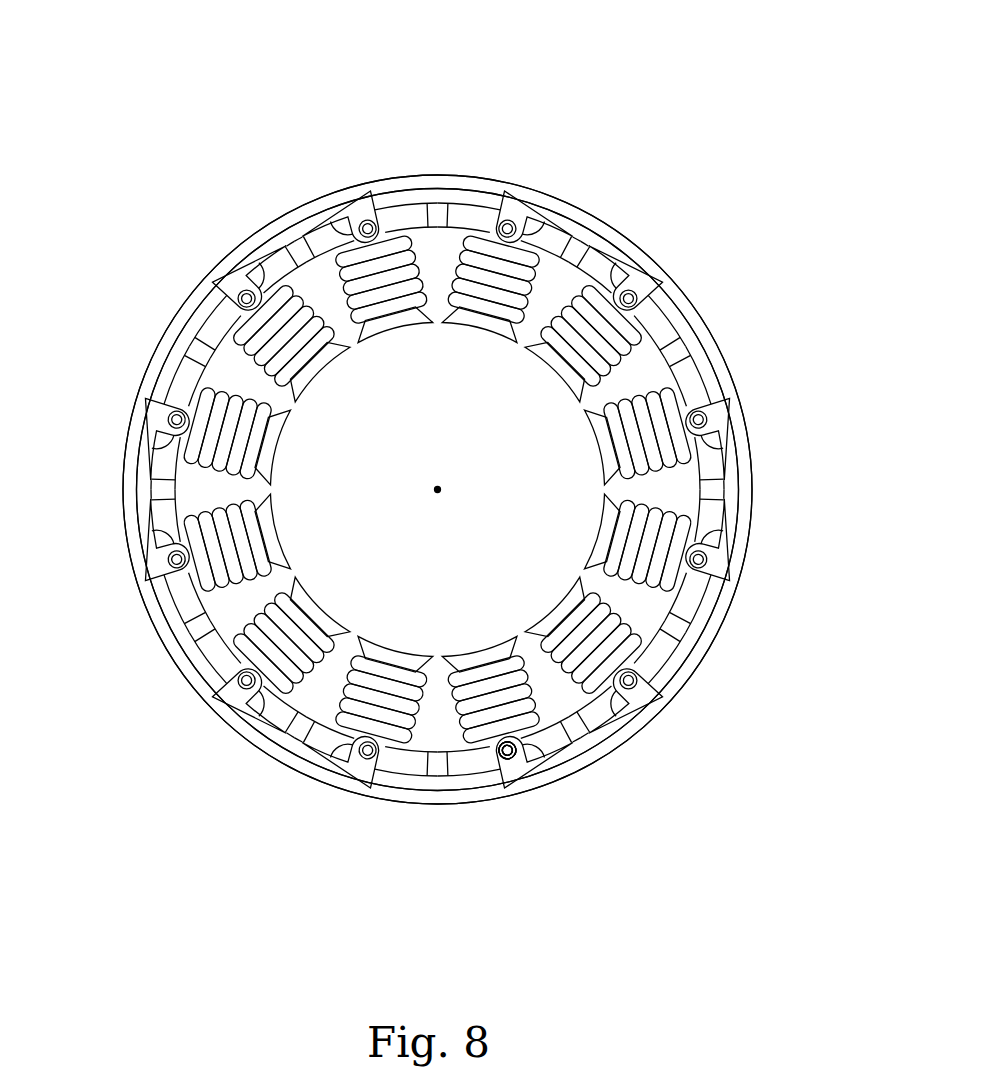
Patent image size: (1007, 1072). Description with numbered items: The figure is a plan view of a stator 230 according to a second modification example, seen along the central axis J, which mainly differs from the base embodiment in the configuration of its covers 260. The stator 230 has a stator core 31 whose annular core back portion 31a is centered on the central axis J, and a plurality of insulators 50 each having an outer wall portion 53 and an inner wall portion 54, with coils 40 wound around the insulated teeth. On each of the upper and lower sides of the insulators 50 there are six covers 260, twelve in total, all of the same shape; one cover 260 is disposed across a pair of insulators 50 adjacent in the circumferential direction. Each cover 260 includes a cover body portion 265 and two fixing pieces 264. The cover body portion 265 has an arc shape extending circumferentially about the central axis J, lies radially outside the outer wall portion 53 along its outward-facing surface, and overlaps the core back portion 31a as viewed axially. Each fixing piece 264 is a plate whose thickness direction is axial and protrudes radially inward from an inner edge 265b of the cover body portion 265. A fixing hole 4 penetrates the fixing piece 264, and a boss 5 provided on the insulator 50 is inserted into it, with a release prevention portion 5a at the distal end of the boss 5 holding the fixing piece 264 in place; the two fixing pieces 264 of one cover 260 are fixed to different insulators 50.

The stator 230 is at (703, 95).
The stator core 31 is at (719, 338).
The core back portion 31a is at (724, 383).
The insulator 50 is at (420, 196).
The outer wall portion 53 is at (393, 214).
The cover 260 is at (279, 217).
The fixing piece 264 is at (337, 226).
The cover body portion 265 is at (301, 217).
The inner edge 265b is at (255, 275).
The coil 40 is at (392, 304).
The inner wall portion 54 is at (487, 312).
The fixing hole 4 is at (499, 753).
The boss 5 is at (503, 760).
The release prevention portion 5a is at (507, 768).
The central axis J is at (441, 489).